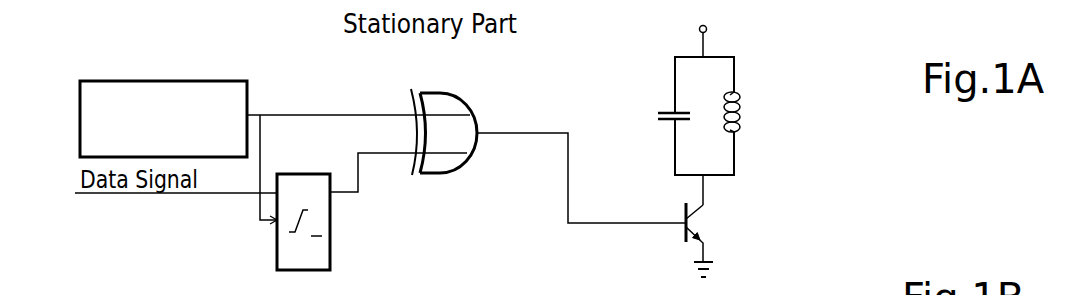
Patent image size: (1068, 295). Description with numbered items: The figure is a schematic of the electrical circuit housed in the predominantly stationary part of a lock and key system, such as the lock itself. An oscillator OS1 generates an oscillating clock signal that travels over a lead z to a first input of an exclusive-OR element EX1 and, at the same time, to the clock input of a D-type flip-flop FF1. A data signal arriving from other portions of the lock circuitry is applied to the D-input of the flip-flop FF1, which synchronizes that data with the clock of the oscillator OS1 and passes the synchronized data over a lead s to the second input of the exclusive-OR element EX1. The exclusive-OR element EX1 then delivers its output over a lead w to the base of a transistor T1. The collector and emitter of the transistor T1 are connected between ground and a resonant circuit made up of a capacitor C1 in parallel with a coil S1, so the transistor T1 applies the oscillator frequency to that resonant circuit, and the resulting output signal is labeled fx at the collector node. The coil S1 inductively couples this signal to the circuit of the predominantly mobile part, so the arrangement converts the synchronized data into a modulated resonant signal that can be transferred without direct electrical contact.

The oscillator OS1 is at (163, 101).
The D-type flip-flop FF1 is at (303, 234).
The exclusive-OR element EX1 is at (442, 113).
The capacitor C1 is at (662, 97).
The coil S1 is at (752, 112).
The transistor T1 is at (684, 240).
The lead Z z is at (358, 156).
The lead S s is at (398, 156).
The lead W w is at (581, 161).
The output frequency signal fx is at (721, 193).